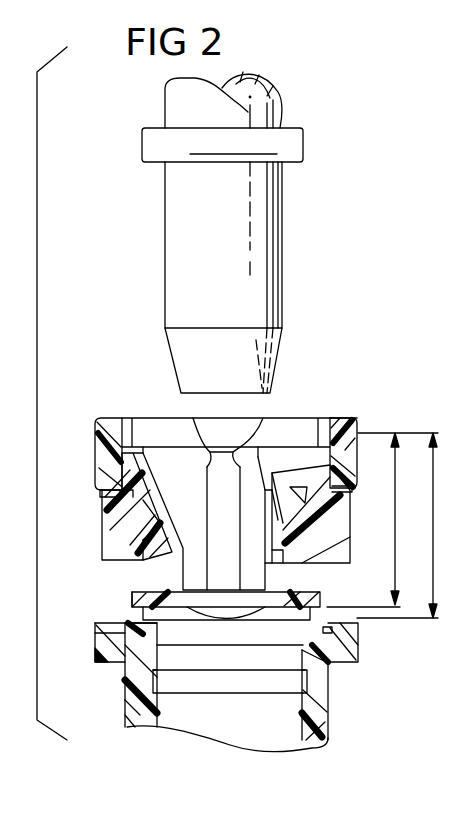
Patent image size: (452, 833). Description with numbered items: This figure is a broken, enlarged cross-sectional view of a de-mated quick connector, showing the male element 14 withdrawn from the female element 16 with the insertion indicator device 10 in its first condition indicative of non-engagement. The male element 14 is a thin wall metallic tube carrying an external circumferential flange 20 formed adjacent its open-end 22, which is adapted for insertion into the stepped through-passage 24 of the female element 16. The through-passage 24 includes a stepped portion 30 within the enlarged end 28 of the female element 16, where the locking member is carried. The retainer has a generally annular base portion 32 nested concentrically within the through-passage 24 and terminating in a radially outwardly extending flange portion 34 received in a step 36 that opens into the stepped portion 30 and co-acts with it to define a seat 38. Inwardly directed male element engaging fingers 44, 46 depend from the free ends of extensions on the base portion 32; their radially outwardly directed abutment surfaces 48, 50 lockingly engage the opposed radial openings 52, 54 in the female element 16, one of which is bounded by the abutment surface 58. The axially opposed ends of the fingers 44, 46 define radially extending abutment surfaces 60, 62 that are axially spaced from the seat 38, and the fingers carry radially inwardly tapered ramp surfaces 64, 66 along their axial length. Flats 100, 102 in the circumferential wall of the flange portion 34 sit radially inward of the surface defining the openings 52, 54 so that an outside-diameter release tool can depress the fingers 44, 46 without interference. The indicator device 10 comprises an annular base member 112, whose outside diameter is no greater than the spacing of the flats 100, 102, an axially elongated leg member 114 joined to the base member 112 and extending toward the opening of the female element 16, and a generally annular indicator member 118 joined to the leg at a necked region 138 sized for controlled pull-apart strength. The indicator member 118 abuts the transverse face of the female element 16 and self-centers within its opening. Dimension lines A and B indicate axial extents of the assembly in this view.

The insertion indicator device 10 is at (338, 400).
The male element 14 is at (138, 95).
The female element 16 is at (120, 715).
The external circumferential flange 20 is at (143, 147).
The open-end 22 is at (181, 262).
The stepped through-passage 24 is at (268, 730).
The enlarged end 28 is at (95, 462).
The stepped portion 30 is at (132, 572).
The base portion 32 is at (183, 640).
The flange portion 34 is at (345, 659).
The step 36 is at (125, 675).
The seat 38 is at (120, 627).
The male element engaging finger 44 is at (298, 563).
The male element engaging finger 46 is at (132, 533).
The abutment surface 48 is at (345, 493).
The abutment surface 50 is at (102, 494).
The radial opening 52 is at (318, 533).
The radial opening 54 is at (132, 556).
The abutment surface 58 is at (97, 488).
The abutment surface 60 is at (243, 597).
The abutment surface 62 is at (146, 588).
The ramp surface 64 is at (283, 470).
The ramp surface 66 is at (132, 513).
The flat 100 is at (333, 630).
The flat 102 is at (118, 633).
The base member 112 is at (140, 608).
The leg member 114 is at (245, 465).
The indicator member 118 is at (130, 427).
The necked region 138 is at (210, 450).
The dimension A is at (382, 520).
The dimension B is at (397, 525).